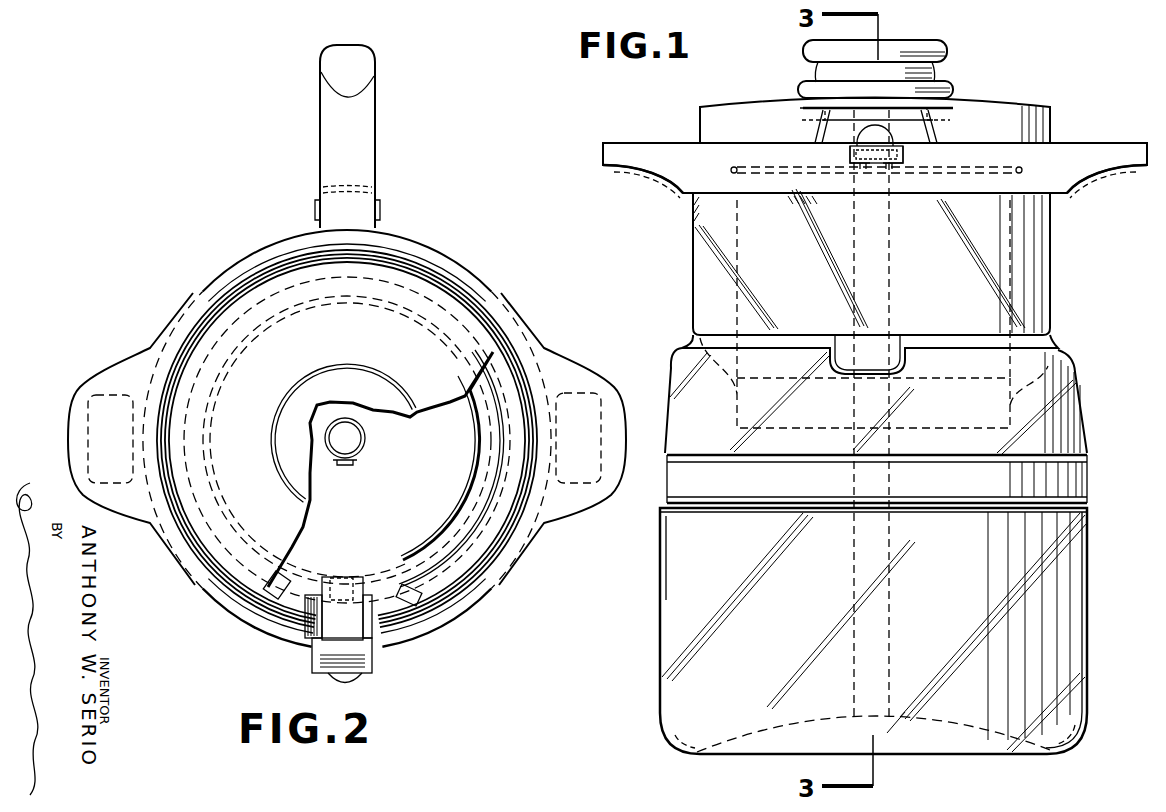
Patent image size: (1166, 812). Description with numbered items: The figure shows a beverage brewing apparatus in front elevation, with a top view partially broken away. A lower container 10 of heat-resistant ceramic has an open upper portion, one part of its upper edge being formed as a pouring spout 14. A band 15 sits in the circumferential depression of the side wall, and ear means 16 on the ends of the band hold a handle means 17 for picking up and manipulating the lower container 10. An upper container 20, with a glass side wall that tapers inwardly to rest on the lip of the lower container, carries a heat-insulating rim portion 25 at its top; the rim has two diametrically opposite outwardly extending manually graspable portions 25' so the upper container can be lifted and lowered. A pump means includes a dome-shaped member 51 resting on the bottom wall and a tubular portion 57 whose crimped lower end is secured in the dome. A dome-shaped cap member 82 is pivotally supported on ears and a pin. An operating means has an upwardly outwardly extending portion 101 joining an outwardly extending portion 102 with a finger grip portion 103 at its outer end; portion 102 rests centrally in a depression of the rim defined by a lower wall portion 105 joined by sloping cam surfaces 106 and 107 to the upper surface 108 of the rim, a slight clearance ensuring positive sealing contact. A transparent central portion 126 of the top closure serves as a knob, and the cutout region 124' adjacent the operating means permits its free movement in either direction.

In FIG. 1, the lower container means 10 is at (1098, 591).
In FIG. 1, the pouring spout 14 is at (918, 375).
In FIG. 2, the pouring spout 14 is at (360, 676).
In FIG. 1, the band 15 is at (1083, 485).
In FIG. 2, the ear means 16 is at (382, 218).
In FIG. 2, the handle means 17 is at (386, 137).
In FIG. 1, the upper container means 20 is at (1068, 290).
In FIG. 2, the upper container means 20 is at (499, 293).
In FIG. 1, the rim portion 25 is at (875, 141).
In FIG. 2, the rim portion 25 is at (361, 438).
In FIG. 1, the manually graspable portions 25' is at (877, 141).
In FIG. 2, the manually graspable portions 25' is at (339, 439).
In FIG. 1, the dome-shaped member 51 is at (803, 720).
In FIG. 1, the tubular portion 57 is at (893, 545).
In FIG. 1, the dome-shaped cap member 82 is at (900, 131).
In FIG. 2, the dome-shaped cap member 82 is at (360, 463).
In FIG. 2, the upwardly outwardly extending portion 101 is at (345, 582).
In FIG. 2, the outwardly extending portion 102 is at (342, 601).
In FIG. 1, the finger grip portion 103 is at (908, 168).
In FIG. 2, the finger grip portion 103 is at (316, 653).
In FIG. 1, the lower wall portion 105 is at (860, 176).
In FIG. 1, the sloping cam surface 106 is at (848, 143).
In FIG. 2, the sloping cam surface 106 is at (310, 625).
In FIG. 1, the sloping cam surface 107 is at (905, 147).
In FIG. 2, the sloping cam surface 107 is at (373, 627).
In FIG. 1, the upper surface of the rim 108 is at (795, 141).
In FIG. 2, the upper surface of the rim 108 is at (243, 607).
In FIG. 1, the knob stem 124' is at (848, 101).
In FIG. 1, the central portion 126 is at (944, 60).
In FIG. 2, the central portion 126 is at (338, 375).